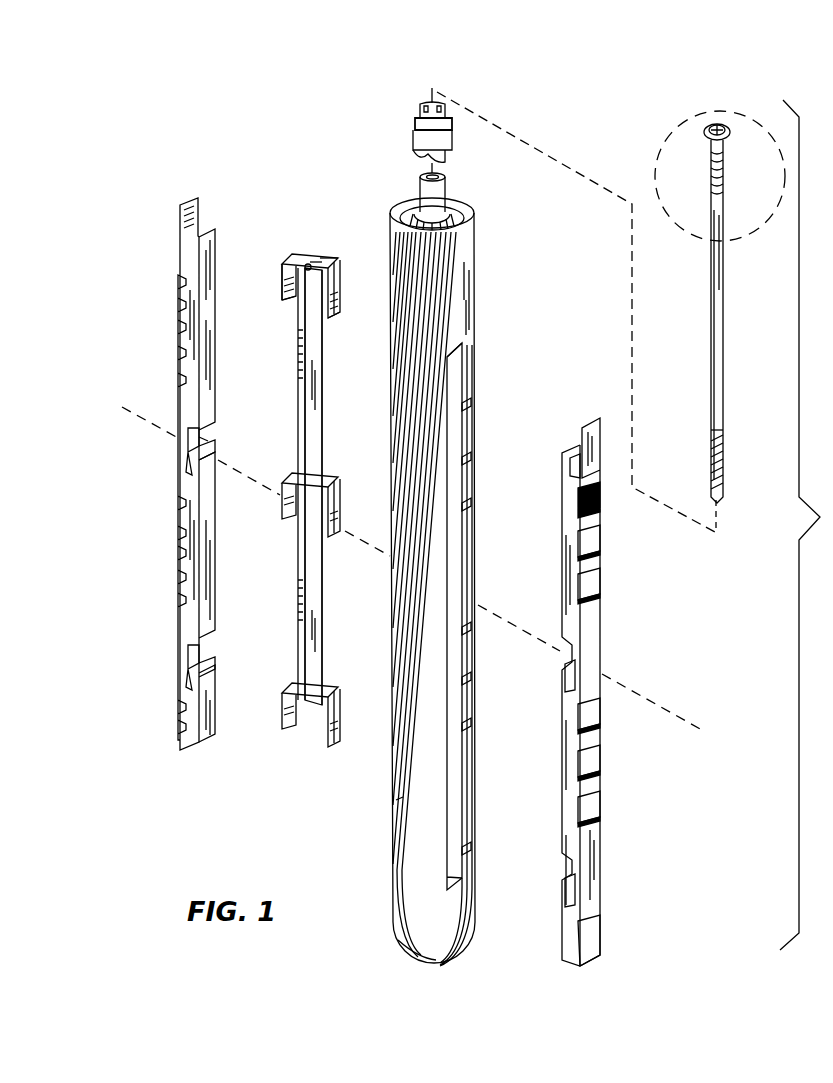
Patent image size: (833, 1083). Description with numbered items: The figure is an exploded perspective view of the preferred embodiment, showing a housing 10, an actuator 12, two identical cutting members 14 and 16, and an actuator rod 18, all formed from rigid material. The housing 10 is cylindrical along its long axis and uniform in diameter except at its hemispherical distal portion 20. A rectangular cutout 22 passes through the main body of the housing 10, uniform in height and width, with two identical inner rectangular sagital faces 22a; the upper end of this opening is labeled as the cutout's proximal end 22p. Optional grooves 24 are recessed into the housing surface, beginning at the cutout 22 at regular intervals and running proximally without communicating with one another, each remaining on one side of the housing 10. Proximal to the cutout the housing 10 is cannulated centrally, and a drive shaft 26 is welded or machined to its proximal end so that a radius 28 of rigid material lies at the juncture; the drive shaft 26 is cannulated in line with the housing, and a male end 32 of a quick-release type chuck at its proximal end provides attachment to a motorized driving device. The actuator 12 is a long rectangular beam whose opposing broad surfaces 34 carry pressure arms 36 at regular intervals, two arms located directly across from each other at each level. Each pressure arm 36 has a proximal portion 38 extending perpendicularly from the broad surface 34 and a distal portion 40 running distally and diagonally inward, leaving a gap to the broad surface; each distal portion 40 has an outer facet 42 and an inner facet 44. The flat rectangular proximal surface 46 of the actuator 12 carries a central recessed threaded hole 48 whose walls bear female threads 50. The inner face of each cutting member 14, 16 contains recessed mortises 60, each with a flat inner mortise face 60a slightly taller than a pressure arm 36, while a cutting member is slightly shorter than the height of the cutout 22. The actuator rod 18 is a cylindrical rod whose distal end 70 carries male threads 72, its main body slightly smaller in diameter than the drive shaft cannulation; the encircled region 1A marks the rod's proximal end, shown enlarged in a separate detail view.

The housing 10 is at (475, 246).
The actuator 12 is at (307, 471).
The cutting member 14 is at (562, 488).
The cutting member 16 is at (163, 474).
The actuator rod 18 is at (712, 296).
The distal portion 20 is at (420, 945).
The rectangular cutout 22 is at (458, 776).
The inner rectangular sagital faces 22a is at (462, 680).
The slot upper end 22p is at (455, 352).
The grooves 24 is at (470, 853).
The drive shaft 26 is at (420, 188).
The radius 28 is at (460, 216).
The male end 32 is at (413, 140).
The broad surfaces 34 is at (308, 432).
The pressure arms 36 is at (285, 476).
The proximal portion 38 is at (288, 262).
The distal portion 40 is at (282, 280).
The outer facet 42 is at (340, 300).
The inner facet 44 is at (284, 296).
The proximal surface 46 is at (326, 262).
The recessed threaded hole 48 is at (315, 264).
The female threads 50 is at (308, 264).
The recessed mortise 60 is at (208, 440).
The inner mortise face 60a is at (188, 442).
The distal end 70 is at (712, 438).
The male threads 72 is at (724, 462).
The encircled view 1A is at (656, 162).